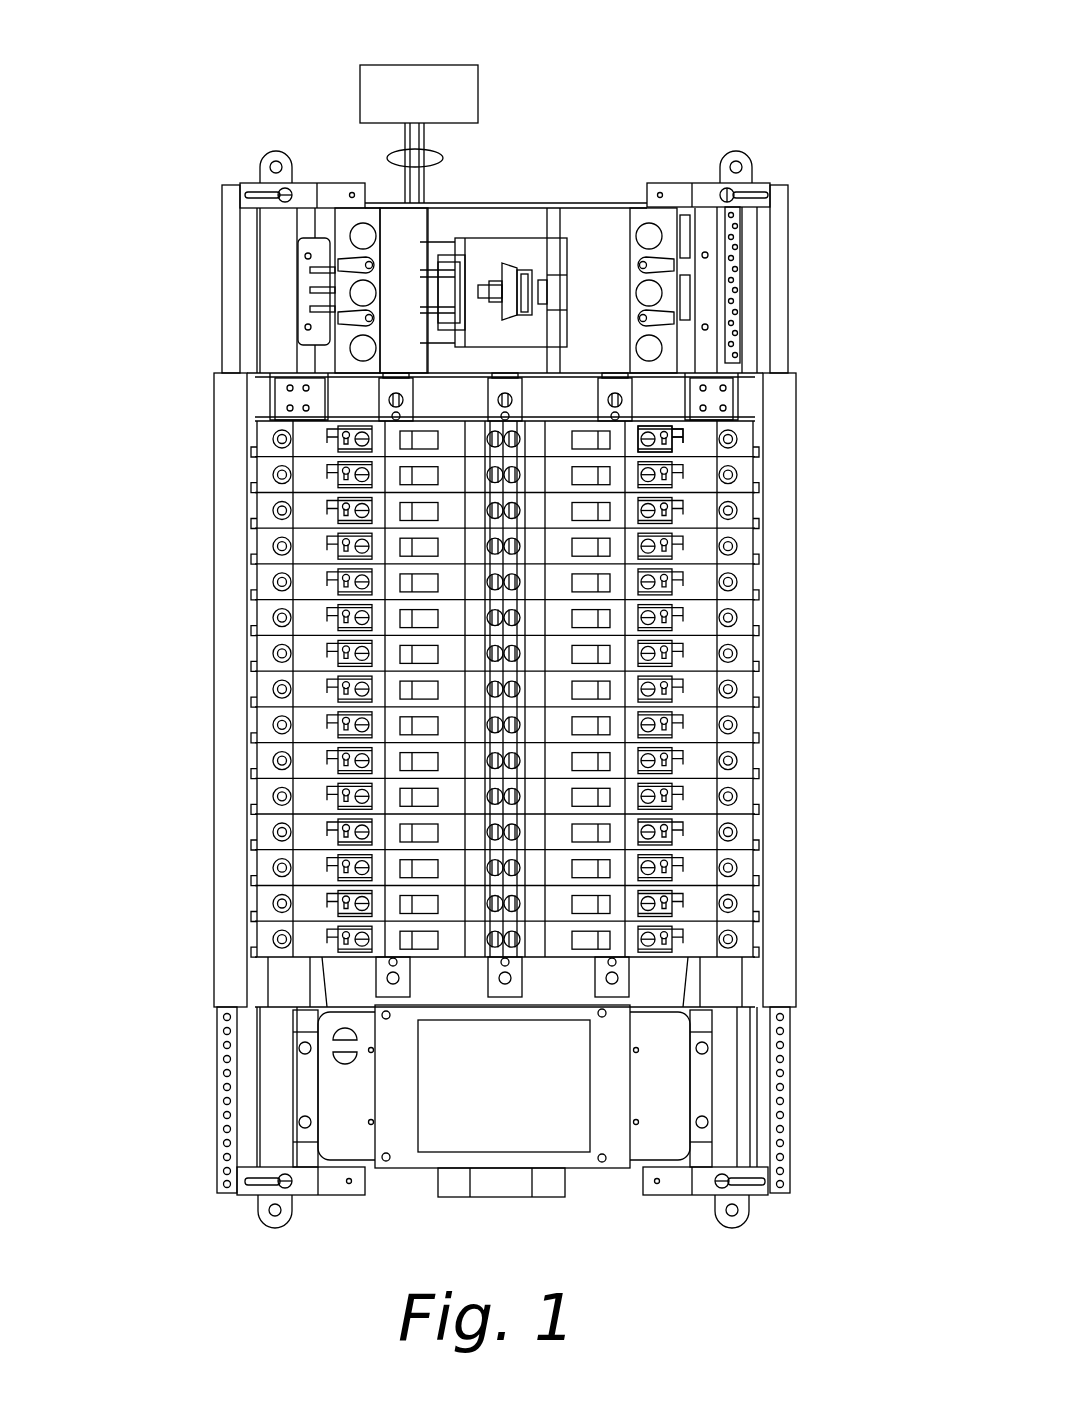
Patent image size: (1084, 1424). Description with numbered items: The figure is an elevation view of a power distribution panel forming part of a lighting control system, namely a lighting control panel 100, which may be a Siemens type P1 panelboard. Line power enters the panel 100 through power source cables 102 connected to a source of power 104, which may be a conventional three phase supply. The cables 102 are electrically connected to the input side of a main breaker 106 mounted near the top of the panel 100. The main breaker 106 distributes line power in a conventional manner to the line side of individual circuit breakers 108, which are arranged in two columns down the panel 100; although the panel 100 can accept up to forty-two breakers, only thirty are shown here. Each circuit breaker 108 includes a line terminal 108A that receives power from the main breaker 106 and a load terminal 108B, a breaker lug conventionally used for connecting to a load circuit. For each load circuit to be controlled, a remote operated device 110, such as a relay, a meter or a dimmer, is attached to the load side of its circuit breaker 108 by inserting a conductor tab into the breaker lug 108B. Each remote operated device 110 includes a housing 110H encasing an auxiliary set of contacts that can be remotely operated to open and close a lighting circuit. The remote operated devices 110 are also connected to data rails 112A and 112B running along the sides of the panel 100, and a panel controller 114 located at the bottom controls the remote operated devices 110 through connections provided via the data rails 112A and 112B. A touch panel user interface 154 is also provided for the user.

The lighting control panel 100 is at (665, 112).
The power source cables 102 is at (443, 158).
The source of power 104 is at (478, 84).
The main breaker 106 is at (507, 250).
The individual circuit breakers 108 is at (611, 426).
The line terminal 108A is at (522, 450).
The load terminal 108B is at (647, 427).
The remote operated device 110 is at (702, 440).
The housing 110H is at (693, 448).
The data rail 112A is at (785, 885).
The data rail 112B is at (225, 888).
The panel controller 114 is at (580, 1160).
The touch panel user interface 154 is at (440, 1131).